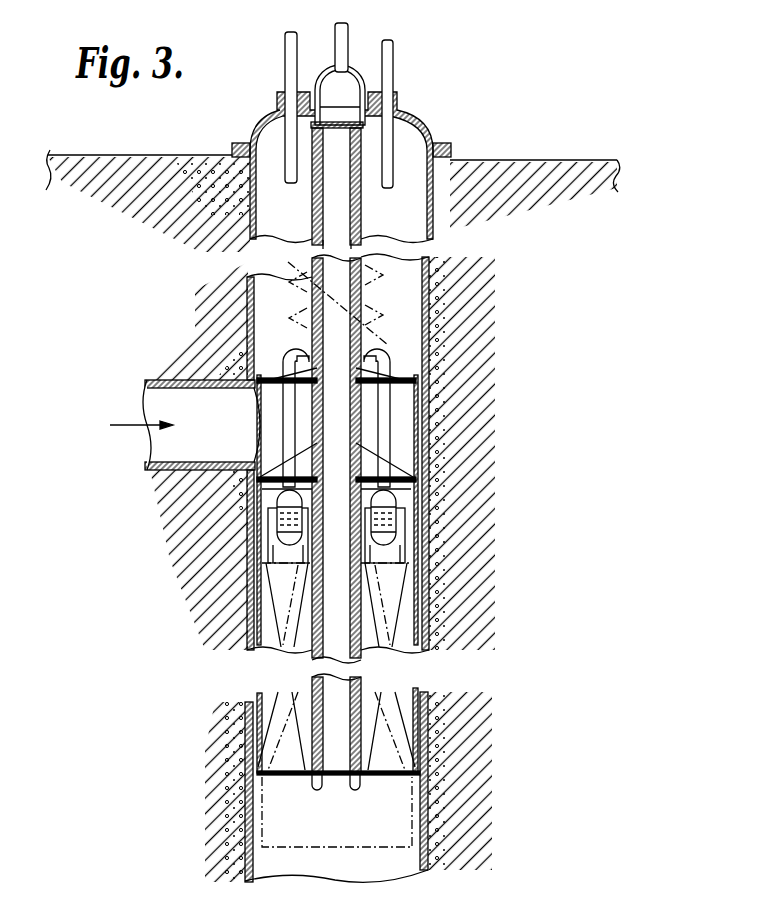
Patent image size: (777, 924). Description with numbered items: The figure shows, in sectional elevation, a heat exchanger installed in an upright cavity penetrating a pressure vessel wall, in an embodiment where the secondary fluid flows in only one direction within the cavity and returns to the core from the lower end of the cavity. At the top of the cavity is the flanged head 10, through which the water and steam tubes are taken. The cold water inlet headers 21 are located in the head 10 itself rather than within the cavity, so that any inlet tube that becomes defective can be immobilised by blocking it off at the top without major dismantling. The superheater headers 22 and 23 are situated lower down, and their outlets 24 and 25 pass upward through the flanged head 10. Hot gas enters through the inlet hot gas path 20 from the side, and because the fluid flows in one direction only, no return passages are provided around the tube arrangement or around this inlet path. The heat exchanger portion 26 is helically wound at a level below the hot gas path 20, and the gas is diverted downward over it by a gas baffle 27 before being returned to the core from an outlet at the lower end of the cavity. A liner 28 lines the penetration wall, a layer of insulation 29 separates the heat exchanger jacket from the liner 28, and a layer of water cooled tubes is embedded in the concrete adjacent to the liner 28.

The flanged head 10 is at (405, 117).
The inlet hot gas path 20 is at (182, 425).
The cold water inlet header 21 is at (343, 78).
The superheater header 22 is at (275, 523).
The superheater header 23 is at (398, 523).
The superheater header outlet 24 is at (285, 68).
The superheater header outlet 25 is at (393, 60).
The heat exchanger portion 26 is at (297, 596).
The gas baffle 27 is at (400, 372).
The liner 28 is at (423, 777).
The layer of insulation 29 is at (425, 822).